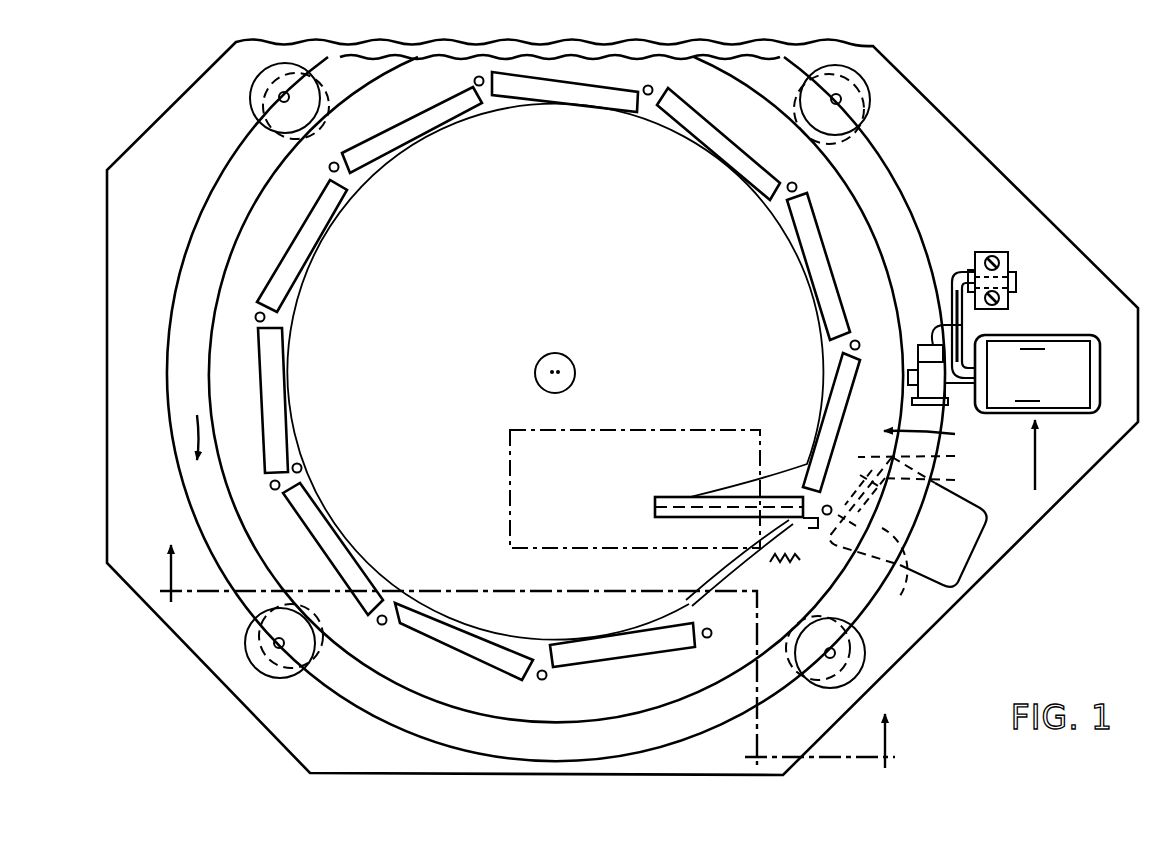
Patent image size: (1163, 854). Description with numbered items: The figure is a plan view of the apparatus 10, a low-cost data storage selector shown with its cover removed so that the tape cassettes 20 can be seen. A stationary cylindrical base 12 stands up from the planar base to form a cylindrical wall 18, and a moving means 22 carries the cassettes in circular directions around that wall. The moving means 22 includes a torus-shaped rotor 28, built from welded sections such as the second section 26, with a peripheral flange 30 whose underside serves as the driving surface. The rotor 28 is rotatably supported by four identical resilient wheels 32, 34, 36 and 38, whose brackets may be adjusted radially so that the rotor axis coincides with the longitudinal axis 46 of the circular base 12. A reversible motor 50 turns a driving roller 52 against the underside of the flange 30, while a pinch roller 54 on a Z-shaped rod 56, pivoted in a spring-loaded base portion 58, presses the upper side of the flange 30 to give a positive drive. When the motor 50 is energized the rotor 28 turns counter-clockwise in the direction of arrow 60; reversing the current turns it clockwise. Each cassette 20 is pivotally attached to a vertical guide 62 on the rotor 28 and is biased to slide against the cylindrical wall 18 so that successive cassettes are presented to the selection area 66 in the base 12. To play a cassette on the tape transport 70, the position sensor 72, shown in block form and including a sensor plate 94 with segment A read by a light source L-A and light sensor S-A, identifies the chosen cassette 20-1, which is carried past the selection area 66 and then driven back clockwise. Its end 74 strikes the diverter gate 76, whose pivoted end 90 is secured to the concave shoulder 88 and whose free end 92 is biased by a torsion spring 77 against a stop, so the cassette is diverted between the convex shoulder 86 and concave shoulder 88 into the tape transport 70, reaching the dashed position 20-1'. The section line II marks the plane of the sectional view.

The apparatus 10 is at (1042, 172).
The cylindrical base 12 is at (545, 265).
The cylindrical wall 18 is at (301, 468).
The tape cassettes 20 is at (551, 100).
The selected cassette 20-1 is at (757, 427).
The cassette in tape transport position 20-1' is at (670, 510).
The moving means 22 is at (942, 258).
The second section 26 is at (235, 301).
The rotor 28 is at (937, 433).
The peripheral flange 30 is at (885, 183).
The resilient wheel 32 is at (862, 104).
The resilient wheel 34 is at (250, 110).
The resilient wheel 36 is at (285, 680).
The resilient wheel 38 is at (826, 690).
The longitudinal axis 46 is at (541, 358).
The reversible motor 50 is at (1093, 405).
The driving roller 52 is at (924, 344).
The pinch roller 54 is at (916, 399).
The Z-shaped rod 56 is at (968, 327).
The base portion 58 is at (1010, 259).
The arrow 60 is at (192, 438).
The guide 62 is at (474, 82).
The selection area 66 is at (771, 491).
The tape transport 70 is at (509, 429).
The position sensor 72 is at (950, 563).
The end of cassette 74 is at (789, 492).
The diverter gate 76 is at (813, 532).
The torsion spring 77 is at (782, 571).
The convex shoulder 86 is at (799, 492).
The concave shoulder 88 is at (706, 521).
The pivoted end of diverter gate 90 is at (775, 528).
The free end of diverter gate 92 is at (823, 540).
The sensor plate 94 is at (893, 576).
The segment A is at (1035, 466).
The light source L-A is at (926, 458).
The light sensor S-A is at (938, 482).
The section line II- II is at (527, 643).